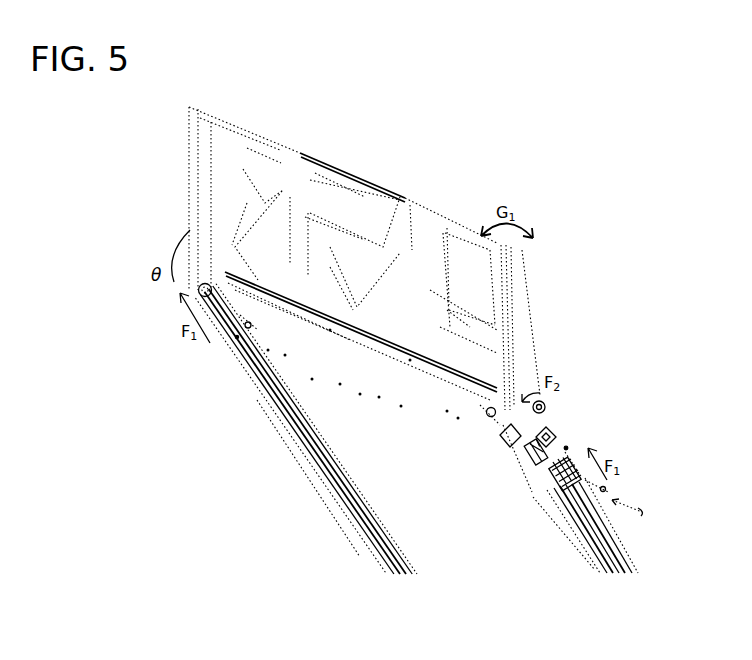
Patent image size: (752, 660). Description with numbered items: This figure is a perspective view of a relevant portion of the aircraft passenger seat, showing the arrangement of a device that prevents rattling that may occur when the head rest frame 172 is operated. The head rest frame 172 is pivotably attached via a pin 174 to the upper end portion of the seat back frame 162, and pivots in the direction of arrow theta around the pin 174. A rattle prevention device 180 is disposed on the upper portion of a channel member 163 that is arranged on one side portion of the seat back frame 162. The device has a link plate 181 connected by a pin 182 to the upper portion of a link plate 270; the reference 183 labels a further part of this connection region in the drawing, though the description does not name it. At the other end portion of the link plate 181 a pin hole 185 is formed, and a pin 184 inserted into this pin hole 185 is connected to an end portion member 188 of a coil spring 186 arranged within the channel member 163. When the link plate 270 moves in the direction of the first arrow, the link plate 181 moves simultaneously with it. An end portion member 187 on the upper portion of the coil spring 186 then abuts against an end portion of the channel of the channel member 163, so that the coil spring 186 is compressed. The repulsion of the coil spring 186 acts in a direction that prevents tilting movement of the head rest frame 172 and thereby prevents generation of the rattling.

The head rest frame 172 is at (254, 150).
The seat back frame 162 is at (305, 385).
The channel member 163 is at (580, 547).
The link plate 270 is at (250, 362).
The pin 174 is at (546, 406).
The rattle prevention device 180 is at (630, 432).
The link plate 181 is at (578, 462).
The pin 182 is at (490, 416).
The engagement hole 183 is at (566, 447).
The pin 184 is at (626, 503).
The pin hole 185 is at (604, 490).
The coil spring 186 is at (548, 480).
The end portion member 187 is at (548, 470).
The end portion member 188 is at (552, 505).